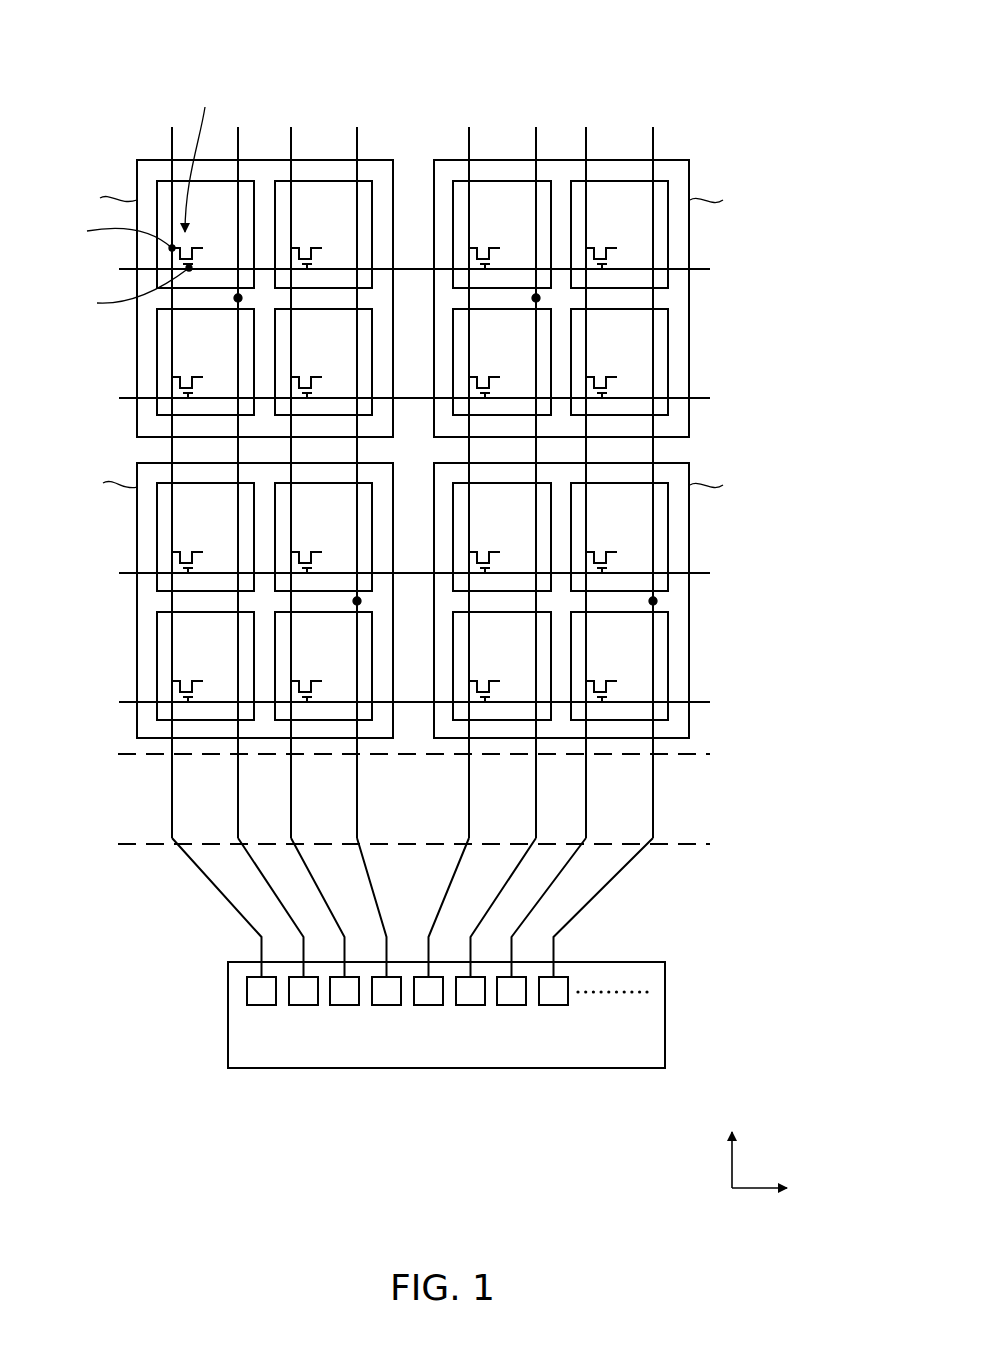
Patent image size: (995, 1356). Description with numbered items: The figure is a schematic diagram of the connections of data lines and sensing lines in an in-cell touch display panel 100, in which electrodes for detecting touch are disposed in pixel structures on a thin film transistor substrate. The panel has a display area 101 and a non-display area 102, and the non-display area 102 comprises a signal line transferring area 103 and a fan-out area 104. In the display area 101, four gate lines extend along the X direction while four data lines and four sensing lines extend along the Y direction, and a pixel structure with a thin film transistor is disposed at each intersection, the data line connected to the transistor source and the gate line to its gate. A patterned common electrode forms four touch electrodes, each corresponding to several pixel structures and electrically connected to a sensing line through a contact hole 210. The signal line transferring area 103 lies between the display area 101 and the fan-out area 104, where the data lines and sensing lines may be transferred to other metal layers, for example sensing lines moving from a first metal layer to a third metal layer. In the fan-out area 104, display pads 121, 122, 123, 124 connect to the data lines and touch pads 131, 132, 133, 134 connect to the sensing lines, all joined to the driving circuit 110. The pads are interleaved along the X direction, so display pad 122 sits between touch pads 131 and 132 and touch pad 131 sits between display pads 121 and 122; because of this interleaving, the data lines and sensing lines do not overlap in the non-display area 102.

The in-cell touch display panel 100 is at (80, 37).
The display area 101 is at (724, 675).
The non-display area 102 is at (524, 957).
The signal line transferring area 103 is at (716, 815).
The fan-out area 104 is at (704, 924).
The driving circuit 110 is at (228, 1012).
The display pad 121 is at (262, 1005).
The display pad 122 is at (344, 1005).
The display pad 123 is at (428, 1005).
The display pad 124 is at (512, 1005).
The touch pad 131 is at (304, 1005).
The touch pad 132 is at (386, 1005).
The touch pad 133 is at (470, 1005).
The touch pad 134 is at (554, 1005).
The contact hole 210 is at (409, 445).